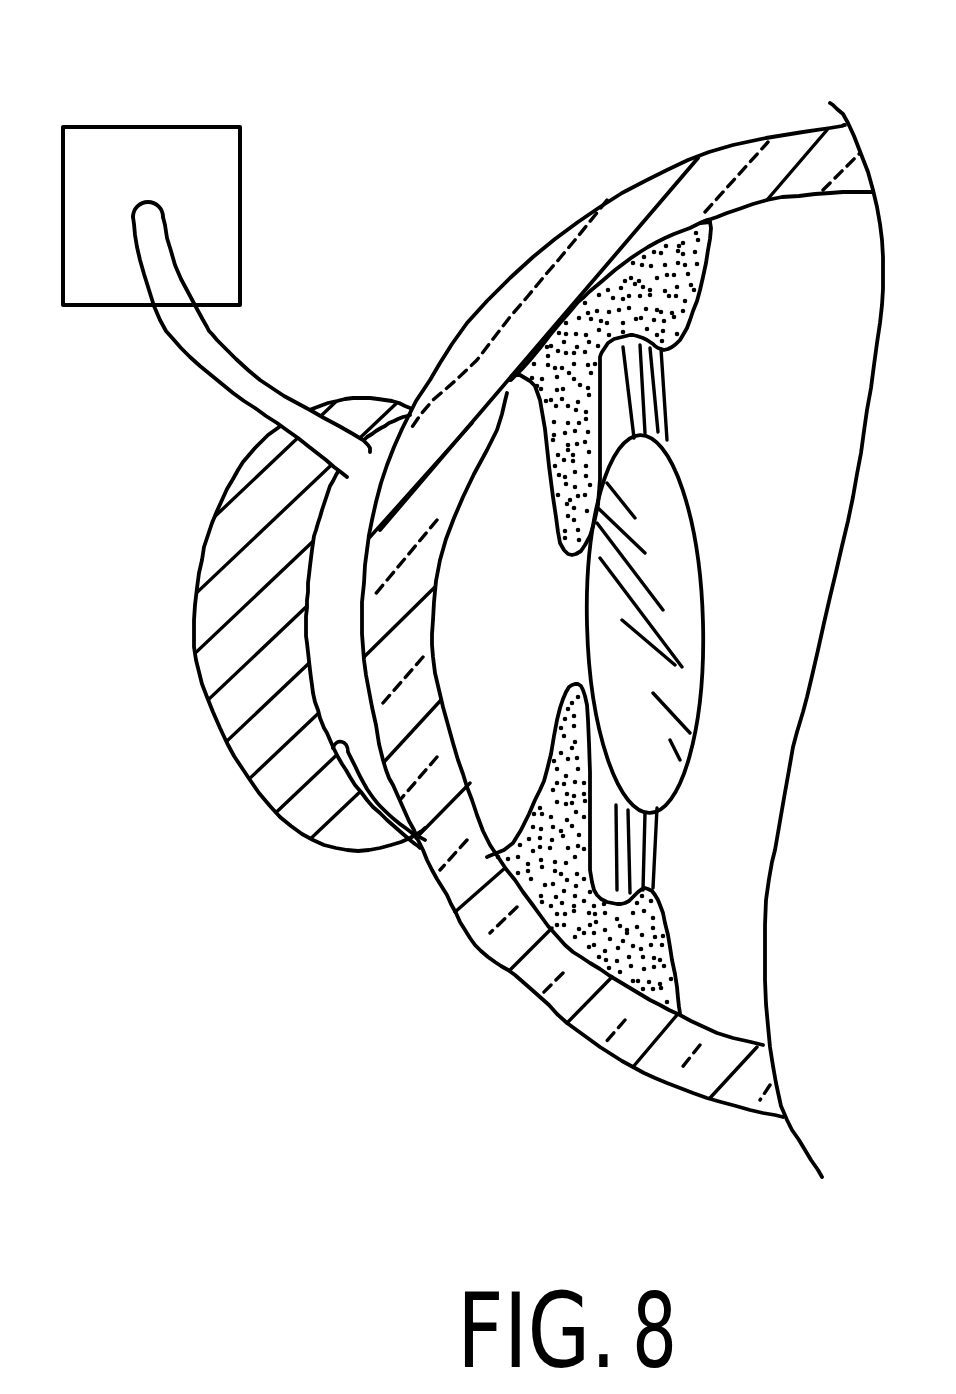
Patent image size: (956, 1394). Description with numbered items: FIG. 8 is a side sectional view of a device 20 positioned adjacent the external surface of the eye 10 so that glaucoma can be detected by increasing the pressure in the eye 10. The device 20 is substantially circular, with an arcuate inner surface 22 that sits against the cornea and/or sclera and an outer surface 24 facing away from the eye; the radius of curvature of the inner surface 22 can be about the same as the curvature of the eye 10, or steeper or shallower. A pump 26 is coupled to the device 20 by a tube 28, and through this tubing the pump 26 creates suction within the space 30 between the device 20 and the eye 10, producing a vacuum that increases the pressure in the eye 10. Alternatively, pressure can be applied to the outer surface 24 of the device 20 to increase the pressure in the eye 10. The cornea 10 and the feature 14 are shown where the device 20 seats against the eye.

The eye 10 is at (462, 926).
The corneal pocket incision line 14 is at (570, 1028).
The device 20 is at (216, 735).
The arcuate inner surface 22 is at (306, 833).
The outer surface 24 is at (197, 570).
The pump 26 is at (155, 127).
The tube 28 is at (265, 372).
The space 30 is at (337, 613).